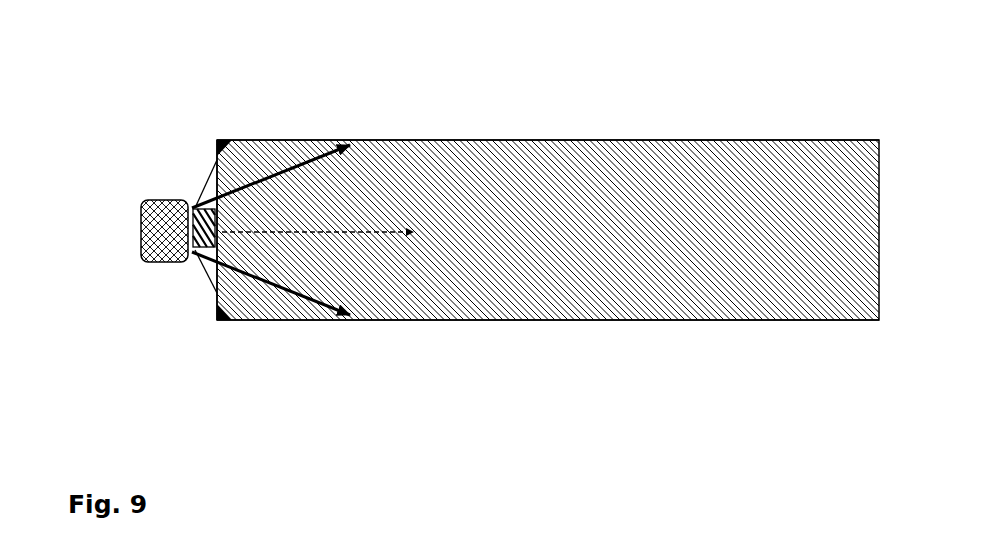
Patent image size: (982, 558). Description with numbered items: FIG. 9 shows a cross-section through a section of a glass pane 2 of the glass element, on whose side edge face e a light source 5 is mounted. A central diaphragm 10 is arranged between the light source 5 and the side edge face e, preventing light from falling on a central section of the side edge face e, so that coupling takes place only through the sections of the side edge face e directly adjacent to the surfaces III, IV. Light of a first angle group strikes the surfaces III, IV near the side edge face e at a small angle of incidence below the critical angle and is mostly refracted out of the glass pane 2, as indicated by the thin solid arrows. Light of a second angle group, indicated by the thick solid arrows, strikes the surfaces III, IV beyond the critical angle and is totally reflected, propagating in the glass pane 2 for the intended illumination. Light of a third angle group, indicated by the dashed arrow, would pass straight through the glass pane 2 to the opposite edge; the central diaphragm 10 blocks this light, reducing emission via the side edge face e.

The glass pane 2 is at (643, 290).
The light source 5 is at (188, 232).
The central diaphragm 10 is at (190, 228).
The side edge face e is at (215, 300).
The surface III is at (600, 140).
The surface IV is at (757, 322).